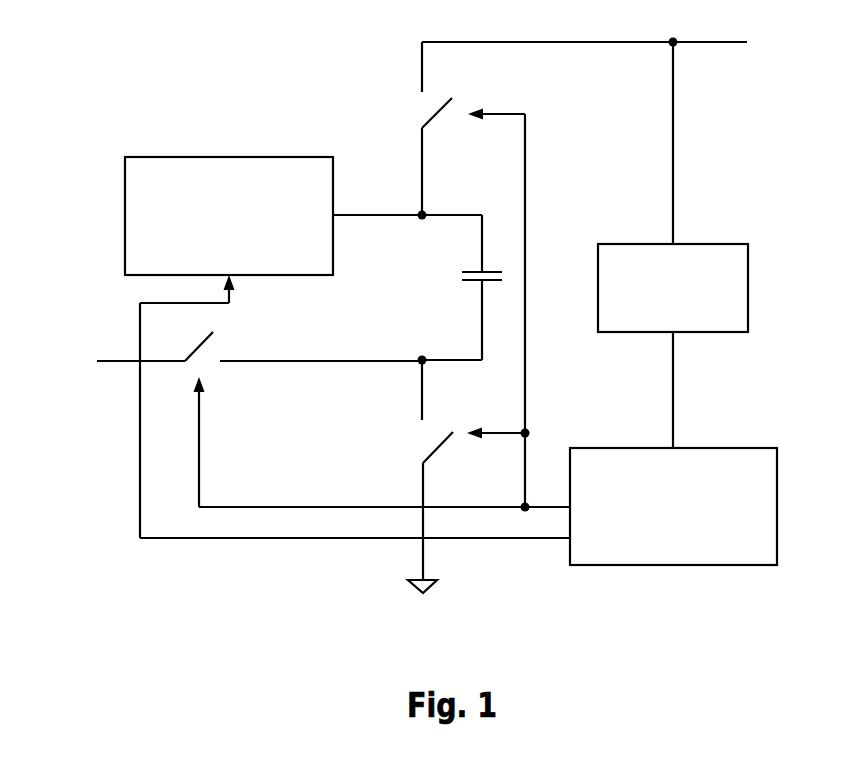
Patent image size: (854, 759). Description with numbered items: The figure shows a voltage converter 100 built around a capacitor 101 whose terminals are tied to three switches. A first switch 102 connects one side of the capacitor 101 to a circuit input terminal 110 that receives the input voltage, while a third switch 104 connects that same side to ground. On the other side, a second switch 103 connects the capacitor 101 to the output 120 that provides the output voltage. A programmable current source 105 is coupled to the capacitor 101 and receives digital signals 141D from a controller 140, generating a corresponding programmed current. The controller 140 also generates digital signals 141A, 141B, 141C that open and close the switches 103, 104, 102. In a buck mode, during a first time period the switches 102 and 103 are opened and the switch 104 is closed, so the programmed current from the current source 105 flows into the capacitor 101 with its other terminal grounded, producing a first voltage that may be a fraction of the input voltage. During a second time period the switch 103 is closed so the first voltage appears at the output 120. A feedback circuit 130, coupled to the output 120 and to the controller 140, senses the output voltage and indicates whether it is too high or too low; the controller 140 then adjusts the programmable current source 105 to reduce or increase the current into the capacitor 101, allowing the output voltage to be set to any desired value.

The voltage converter 100 is at (89, 58).
The capacitor 101 is at (472, 285).
The switch 102 is at (215, 348).
The switch 103 is at (440, 117).
The switch 104 is at (440, 447).
The programmable current source 105 is at (232, 157).
The input voltage Vin 110 is at (117, 363).
The output 120 is at (727, 45).
The feedback circuit 130 is at (718, 244).
The controller 140 is at (730, 447).
The digital signal 141A is at (500, 113).
The digital signal 141B is at (503, 433).
The digital signal 141C is at (199, 448).
The digital signals 141D is at (168, 538).